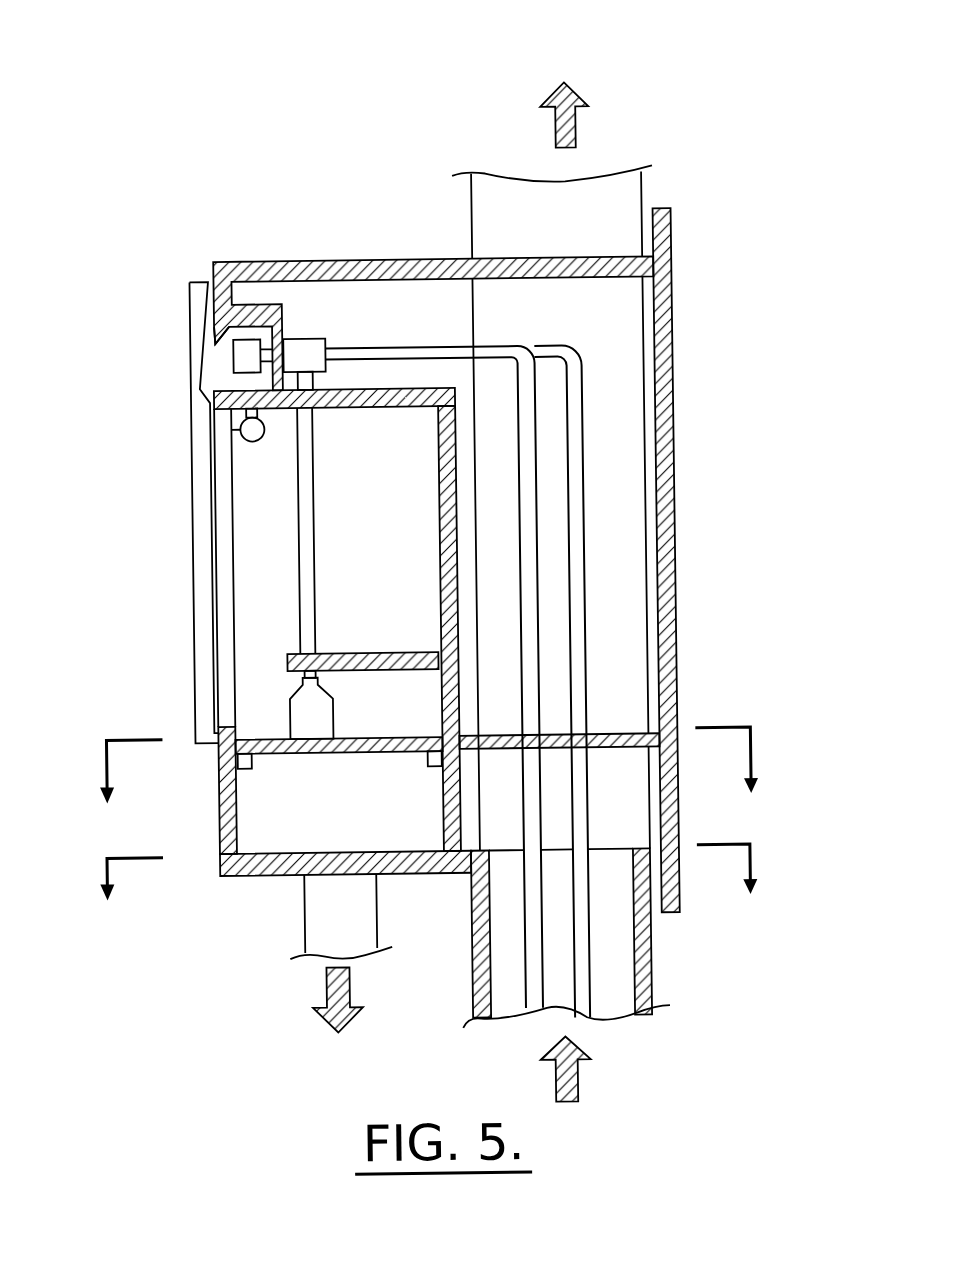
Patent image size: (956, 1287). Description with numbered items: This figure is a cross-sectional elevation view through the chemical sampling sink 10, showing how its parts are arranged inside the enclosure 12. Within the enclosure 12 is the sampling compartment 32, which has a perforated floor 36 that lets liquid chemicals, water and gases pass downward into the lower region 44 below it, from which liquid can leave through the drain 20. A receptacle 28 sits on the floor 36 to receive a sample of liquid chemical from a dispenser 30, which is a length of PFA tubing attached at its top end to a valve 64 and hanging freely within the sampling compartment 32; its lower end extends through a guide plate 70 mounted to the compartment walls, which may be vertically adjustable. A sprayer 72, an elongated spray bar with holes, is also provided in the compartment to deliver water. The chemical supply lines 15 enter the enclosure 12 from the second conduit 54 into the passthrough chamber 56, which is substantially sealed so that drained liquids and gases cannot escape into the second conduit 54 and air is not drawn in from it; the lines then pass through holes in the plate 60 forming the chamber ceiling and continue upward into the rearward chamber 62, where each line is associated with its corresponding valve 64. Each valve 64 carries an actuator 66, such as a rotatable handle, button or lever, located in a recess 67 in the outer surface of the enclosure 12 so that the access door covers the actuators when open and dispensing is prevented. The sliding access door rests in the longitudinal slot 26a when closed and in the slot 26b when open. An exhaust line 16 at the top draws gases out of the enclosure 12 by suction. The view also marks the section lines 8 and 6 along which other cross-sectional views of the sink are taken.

The chemical sampling sink 10 is at (788, 76).
The enclosure 12 is at (678, 346).
The chemical supply lines 15 is at (541, 991).
The exhaust line 16 is at (648, 192).
The drain 20 is at (295, 923).
The longitudinal slot 26a is at (224, 550).
The slot 26b is at (207, 399).
The receptacle 28 is at (328, 715).
The dispenser 30 is at (296, 603).
The sampling compartment 32 is at (262, 520).
The floor 36 is at (262, 750).
The lower region 44 is at (274, 823).
The second conduit 54 is at (466, 1003).
The passthrough chamber 56 is at (627, 782).
The plate 60 is at (621, 737).
The rearward chamber 62 is at (621, 507).
The valve 64 is at (310, 337).
The actuator 66 is at (236, 349).
The recess 67 is at (221, 332).
The guide plate 70 is at (286, 658).
The sprayer 72 is at (246, 437).
The section line 8- 8 is at (440, 767).
The section line 6- 6 is at (441, 876).